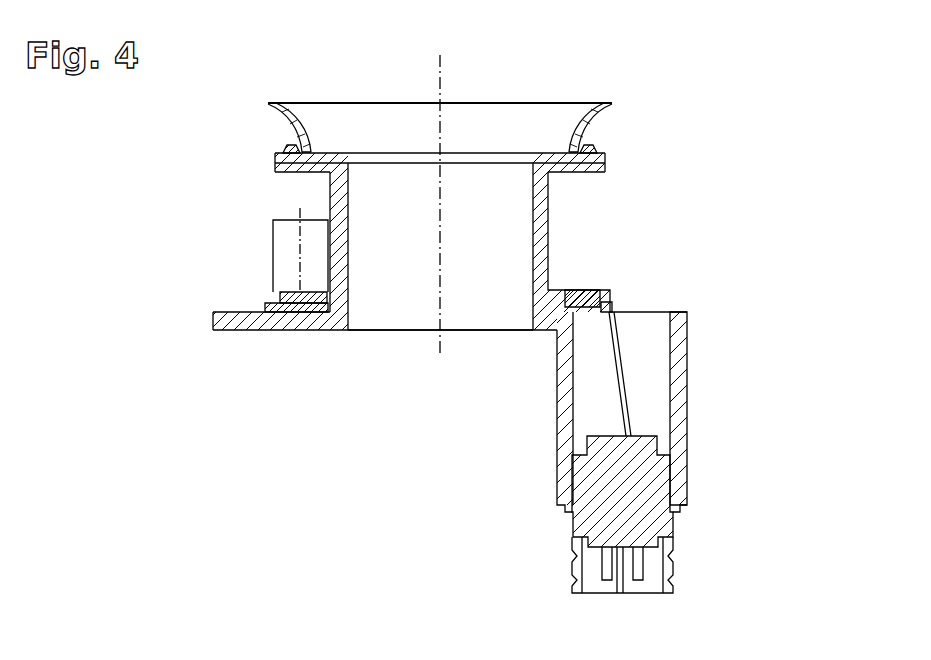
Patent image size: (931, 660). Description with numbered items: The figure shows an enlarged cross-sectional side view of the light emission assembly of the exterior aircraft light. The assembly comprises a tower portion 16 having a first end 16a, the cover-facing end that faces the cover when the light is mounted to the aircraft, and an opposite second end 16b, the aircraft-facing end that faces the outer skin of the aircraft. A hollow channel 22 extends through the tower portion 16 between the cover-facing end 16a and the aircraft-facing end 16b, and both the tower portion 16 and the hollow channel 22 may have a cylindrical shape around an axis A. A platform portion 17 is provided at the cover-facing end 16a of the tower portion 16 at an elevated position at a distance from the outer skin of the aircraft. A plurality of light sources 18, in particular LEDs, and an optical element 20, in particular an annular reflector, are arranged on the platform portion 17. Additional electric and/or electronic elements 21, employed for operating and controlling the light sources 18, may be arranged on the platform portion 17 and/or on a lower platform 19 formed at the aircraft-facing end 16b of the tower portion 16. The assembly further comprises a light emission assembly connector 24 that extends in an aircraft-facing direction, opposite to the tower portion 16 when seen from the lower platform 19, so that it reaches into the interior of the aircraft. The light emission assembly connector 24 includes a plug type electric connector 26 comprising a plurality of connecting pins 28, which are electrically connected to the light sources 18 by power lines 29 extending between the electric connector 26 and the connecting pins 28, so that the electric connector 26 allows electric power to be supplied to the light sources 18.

The axis A is at (443, 63).
The tower portion 16 is at (560, 236).
The first end 16a is at (277, 179).
The second end 16b is at (267, 339).
The platform portion 17 is at (611, 157).
The light sources 18 is at (282, 143).
The lower platform 19 is at (230, 324).
The optical element 20 is at (573, 99).
The electric and/or electronic elements 21 is at (283, 257).
The hollow channel 22 is at (423, 339).
The light emission assembly connector 24 is at (717, 448).
The electric connector 26 is at (604, 508).
The connecting pins 28 is at (597, 599).
The power lines 29 is at (624, 354).